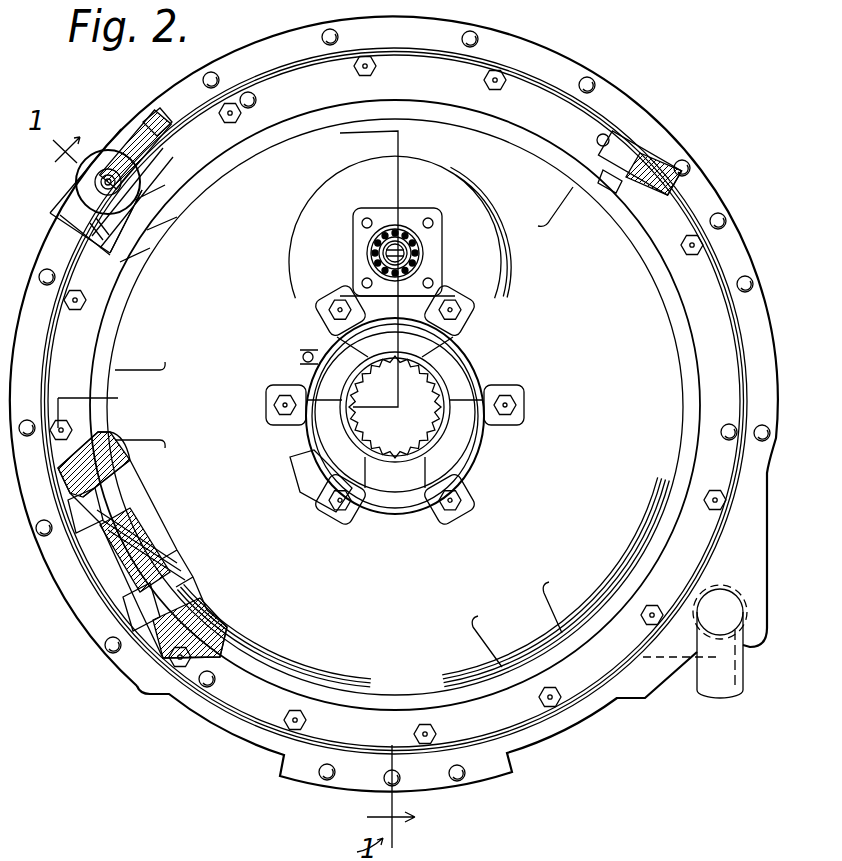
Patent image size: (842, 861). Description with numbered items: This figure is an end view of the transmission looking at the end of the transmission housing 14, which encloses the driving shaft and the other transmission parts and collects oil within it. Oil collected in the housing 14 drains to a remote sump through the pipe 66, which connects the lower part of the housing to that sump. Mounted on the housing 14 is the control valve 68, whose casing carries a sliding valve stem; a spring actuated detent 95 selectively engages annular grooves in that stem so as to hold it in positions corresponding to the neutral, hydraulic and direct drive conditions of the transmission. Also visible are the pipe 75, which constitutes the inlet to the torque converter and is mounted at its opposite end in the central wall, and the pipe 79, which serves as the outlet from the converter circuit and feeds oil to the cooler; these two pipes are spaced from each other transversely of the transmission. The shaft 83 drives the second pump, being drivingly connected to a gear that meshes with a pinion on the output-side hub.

The transmission housing 14 is at (582, 68).
The pipe 66 is at (700, 682).
The control valve 68 is at (71, 186).
The pipe 75 is at (83, 523).
The pipe 79 is at (140, 630).
The shaft 83 is at (404, 250).
The spring actuated detent 95 is at (105, 168).